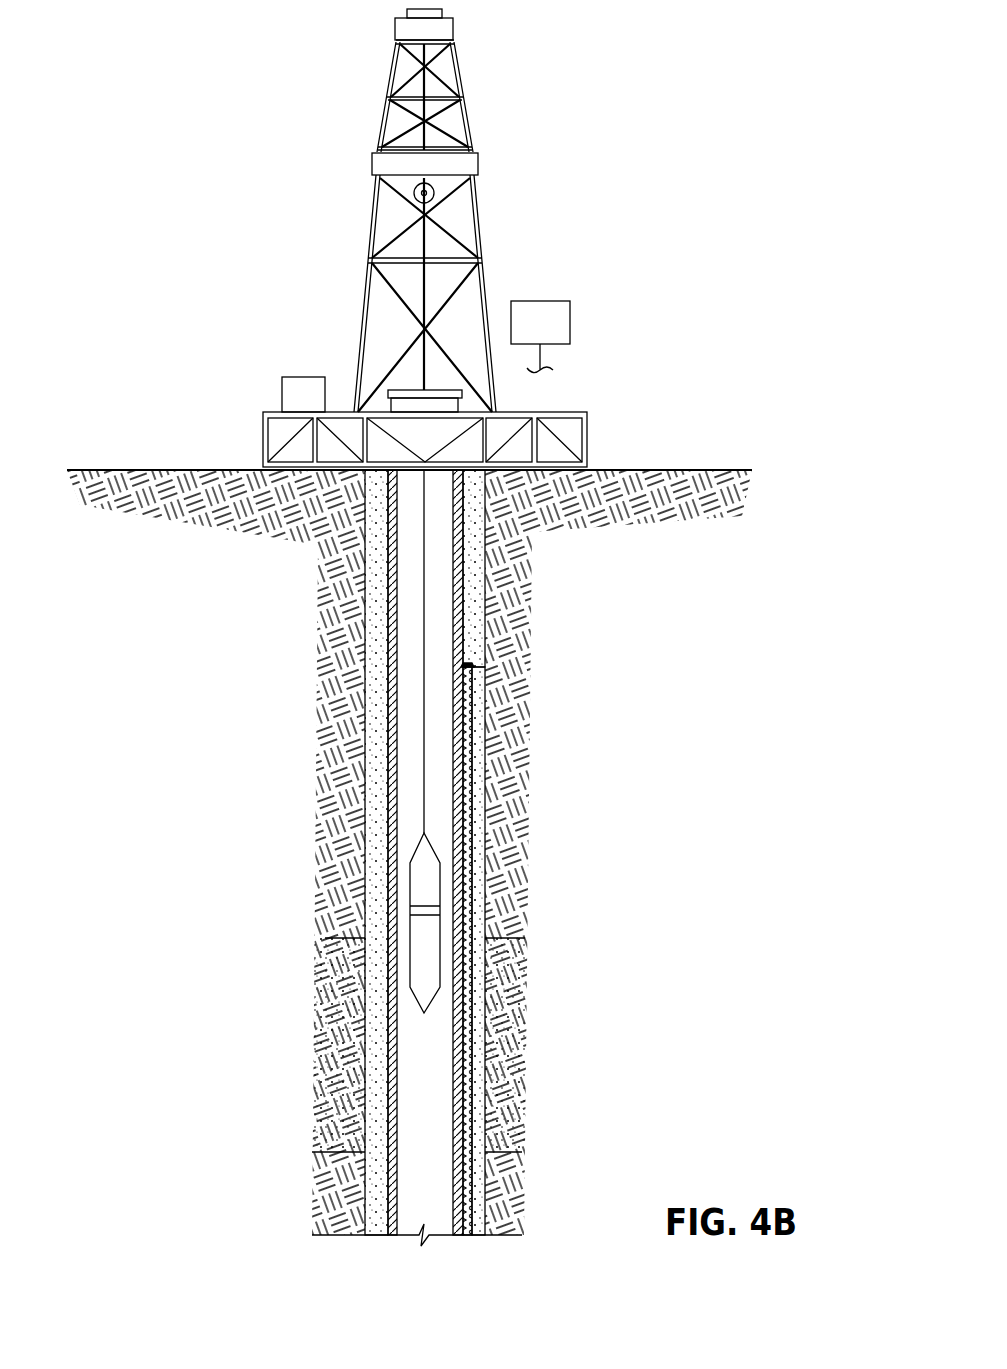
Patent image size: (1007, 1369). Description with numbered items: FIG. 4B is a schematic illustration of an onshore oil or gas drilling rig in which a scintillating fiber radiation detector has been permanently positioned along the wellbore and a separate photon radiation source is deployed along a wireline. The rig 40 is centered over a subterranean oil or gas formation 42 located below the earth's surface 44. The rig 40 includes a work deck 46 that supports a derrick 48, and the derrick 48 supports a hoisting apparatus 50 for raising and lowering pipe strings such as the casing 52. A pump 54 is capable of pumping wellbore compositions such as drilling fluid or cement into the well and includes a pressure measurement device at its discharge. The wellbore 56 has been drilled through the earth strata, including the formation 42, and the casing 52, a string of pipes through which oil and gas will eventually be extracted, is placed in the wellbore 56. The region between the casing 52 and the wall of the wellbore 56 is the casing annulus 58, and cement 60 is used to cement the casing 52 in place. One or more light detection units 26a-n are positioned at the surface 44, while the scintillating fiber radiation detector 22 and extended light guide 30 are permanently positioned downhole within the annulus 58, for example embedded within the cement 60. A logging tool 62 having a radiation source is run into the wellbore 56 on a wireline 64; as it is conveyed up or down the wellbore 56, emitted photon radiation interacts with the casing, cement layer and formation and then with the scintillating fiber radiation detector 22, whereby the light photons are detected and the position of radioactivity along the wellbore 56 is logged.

The scintillating fiber radiation detector 22 is at (470, 748).
The light detection units 26a-n is at (542, 300).
The extended light guide 30 is at (465, 602).
The rig 40 is at (396, 238).
The subterranean oil or gas formation 42 is at (498, 1052).
The earth's surface 44 is at (652, 470).
The work deck 46 is at (263, 440).
The derrick 48 is at (458, 78).
The hoisting apparatus 50 is at (433, 198).
The casing 52 is at (388, 660).
The pump 54 is at (282, 392).
The wellbore 56 is at (512, 660).
The casing annulus 58 is at (377, 625).
The cement 60 is at (337, 815).
The logging tool 62 is at (410, 968).
The wireline 64 is at (424, 768).